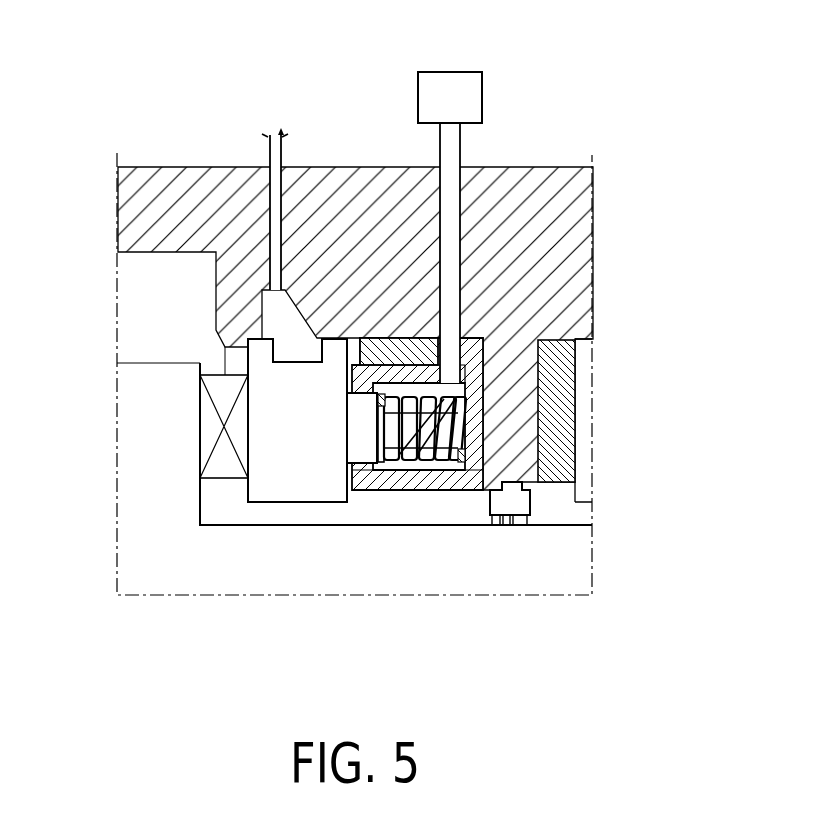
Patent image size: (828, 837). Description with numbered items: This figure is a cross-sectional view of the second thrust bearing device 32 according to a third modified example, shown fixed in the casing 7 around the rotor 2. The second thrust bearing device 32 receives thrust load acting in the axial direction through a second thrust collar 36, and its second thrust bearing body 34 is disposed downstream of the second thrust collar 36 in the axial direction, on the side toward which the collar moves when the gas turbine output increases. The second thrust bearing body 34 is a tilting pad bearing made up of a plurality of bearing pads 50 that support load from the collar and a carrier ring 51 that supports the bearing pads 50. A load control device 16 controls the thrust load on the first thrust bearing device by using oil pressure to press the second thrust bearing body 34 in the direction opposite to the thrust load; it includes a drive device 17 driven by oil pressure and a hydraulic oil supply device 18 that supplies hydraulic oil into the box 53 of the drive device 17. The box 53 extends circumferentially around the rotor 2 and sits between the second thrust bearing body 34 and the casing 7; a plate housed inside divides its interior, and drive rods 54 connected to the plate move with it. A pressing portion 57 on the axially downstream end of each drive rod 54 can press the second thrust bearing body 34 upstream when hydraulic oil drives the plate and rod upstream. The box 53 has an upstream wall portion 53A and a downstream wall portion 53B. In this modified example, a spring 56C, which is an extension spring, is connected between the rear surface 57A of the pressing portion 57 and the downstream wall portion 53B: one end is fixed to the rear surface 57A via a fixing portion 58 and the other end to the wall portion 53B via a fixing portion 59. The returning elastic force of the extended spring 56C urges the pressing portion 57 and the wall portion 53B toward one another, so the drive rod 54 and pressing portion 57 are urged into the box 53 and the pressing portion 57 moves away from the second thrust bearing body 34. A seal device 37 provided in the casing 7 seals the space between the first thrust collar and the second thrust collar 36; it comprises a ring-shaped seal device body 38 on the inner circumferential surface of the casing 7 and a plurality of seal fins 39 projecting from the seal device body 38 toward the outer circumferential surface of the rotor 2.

The rotor 2 is at (140, 569).
The casing 7 is at (131, 198).
The load control device 16 is at (488, 157).
The drive device 17 is at (470, 332).
The hydraulic oil supply device 18 is at (452, 72).
The second thrust bearing device 32 is at (188, 498).
The second thrust bearing body 34 is at (255, 508).
The second thrust collar 36 is at (132, 380).
The seal device 37 is at (530, 500).
The seal device body 38 is at (513, 520).
The seal fins 39 is at (530, 518).
The bearing pads 50 is at (227, 473).
The carrier ring 51 is at (295, 495).
The box 53 is at (470, 343).
The wall portion 53A is at (358, 485).
The wall portion 53B is at (480, 387).
The drive rods 54 is at (420, 455).
The spring 56C is at (450, 460).
The pressing portion 57 is at (353, 440).
The rear surface 57A is at (381, 455).
The fixing portion 58 is at (383, 394).
The fixing portion 59 is at (483, 446).